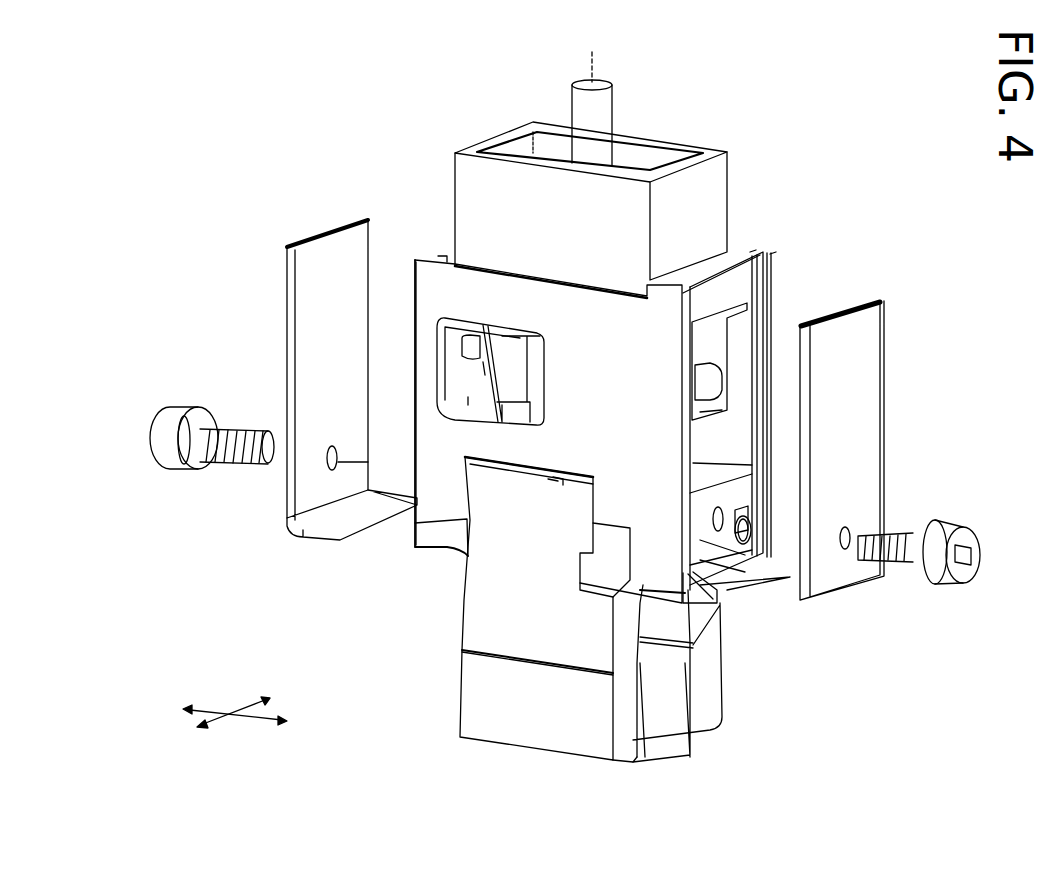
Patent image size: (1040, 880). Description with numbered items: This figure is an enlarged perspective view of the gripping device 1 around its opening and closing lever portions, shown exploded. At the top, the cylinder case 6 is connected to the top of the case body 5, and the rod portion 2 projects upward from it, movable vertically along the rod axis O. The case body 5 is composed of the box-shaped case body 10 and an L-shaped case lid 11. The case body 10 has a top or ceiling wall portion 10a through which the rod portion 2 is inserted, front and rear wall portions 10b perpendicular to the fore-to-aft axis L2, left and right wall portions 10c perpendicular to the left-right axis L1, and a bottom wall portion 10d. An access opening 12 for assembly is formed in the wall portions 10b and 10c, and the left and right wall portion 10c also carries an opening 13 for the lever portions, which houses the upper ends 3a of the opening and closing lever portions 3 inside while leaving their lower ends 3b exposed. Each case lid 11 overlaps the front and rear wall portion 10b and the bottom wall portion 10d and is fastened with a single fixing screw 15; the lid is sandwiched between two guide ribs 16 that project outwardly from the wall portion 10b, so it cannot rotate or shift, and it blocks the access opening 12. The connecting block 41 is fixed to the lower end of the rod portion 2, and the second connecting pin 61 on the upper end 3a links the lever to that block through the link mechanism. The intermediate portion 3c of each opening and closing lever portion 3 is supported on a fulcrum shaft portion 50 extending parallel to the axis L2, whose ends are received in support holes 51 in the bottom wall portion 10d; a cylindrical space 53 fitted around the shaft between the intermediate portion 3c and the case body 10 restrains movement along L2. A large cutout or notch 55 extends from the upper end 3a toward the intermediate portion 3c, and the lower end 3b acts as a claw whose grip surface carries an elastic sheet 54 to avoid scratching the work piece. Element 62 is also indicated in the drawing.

The switch device 1 is at (866, 103).
The rod portion 2 is at (602, 109).
The opening and closing lever portion 3 is at (599, 614).
The upper end of opening and closing lever portion 3a is at (517, 348).
The lower end of opening and closing lever portion 3b is at (530, 727).
The intermediate portion of opening and closing lever portion 3c is at (493, 501).
The case body (housing) 5 is at (850, 194).
The cylinder case 6 is at (717, 178).
The case body 10 is at (778, 251).
The top or ceiling wall portion 10a is at (452, 260).
The front and rear wall portion 10b is at (740, 278).
The left and right wall portion 10c is at (584, 406).
The bottom wall portion 10d is at (443, 555).
The case lid 11 is at (335, 245).
The access opening 12 is at (468, 400).
The opening for lever portions 13 is at (415, 523).
The fixing screw 15 is at (163, 407).
The guide rib 16 is at (445, 258).
The connecting block 41 is at (560, 484).
The fulcrum shaft portion 50 is at (745, 545).
The support hole 51 is at (747, 507).
The cylindrical space 53 is at (610, 535).
The elastic sheet 54 is at (645, 748).
The cutout or notch 55 is at (555, 481).
The second connecting pin 61 is at (463, 347).
The stopper groove 62 is at (483, 368).
The left-right axis L1 is at (225, 713).
The fore-to-aft axis L2 is at (225, 713).
The rod axis O is at (594, 56).